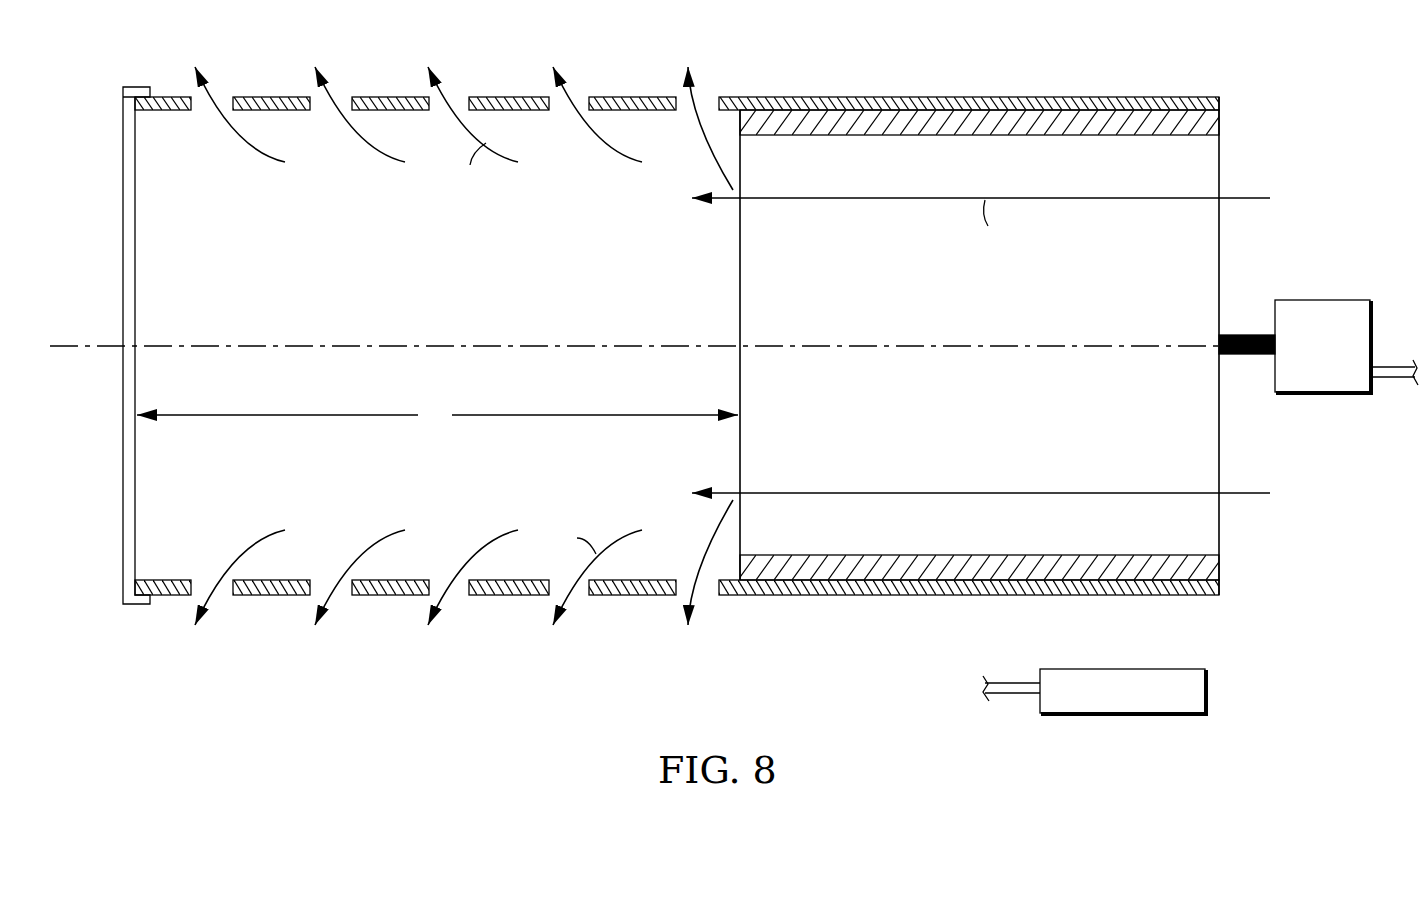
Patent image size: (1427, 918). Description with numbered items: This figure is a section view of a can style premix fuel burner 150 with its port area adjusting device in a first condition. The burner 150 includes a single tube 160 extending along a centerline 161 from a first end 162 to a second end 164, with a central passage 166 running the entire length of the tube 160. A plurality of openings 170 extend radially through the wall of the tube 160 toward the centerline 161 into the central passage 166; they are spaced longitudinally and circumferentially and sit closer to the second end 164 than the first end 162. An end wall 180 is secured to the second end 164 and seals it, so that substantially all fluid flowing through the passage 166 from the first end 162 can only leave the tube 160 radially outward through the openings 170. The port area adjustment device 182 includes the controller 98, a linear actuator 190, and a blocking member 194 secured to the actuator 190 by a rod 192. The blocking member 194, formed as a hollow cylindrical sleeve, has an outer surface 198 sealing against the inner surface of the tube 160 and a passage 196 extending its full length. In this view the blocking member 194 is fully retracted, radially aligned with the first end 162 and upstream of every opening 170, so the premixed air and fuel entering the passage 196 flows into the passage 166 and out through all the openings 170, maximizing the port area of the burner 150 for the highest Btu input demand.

The fuel burner 150 is at (679, 332).
The second end 164 is at (677, 63).
The openings 170 is at (218, 80).
The tube 160 is at (1001, 298).
The outer surface 198 is at (1095, 99).
The first end 162 is at (1213, 95).
The blocking member 194 is at (1226, 117).
The passage 196 is at (1192, 164).
The end wall 180 is at (123, 290).
The centerline 161 is at (78, 348).
The rod 192 is at (1253, 333).
The port area adjustment device 182 is at (1250, 370).
The linear actuator 190 is at (1322, 393).
The central passage 166 is at (391, 560).
The controller 98 is at (1207, 690).